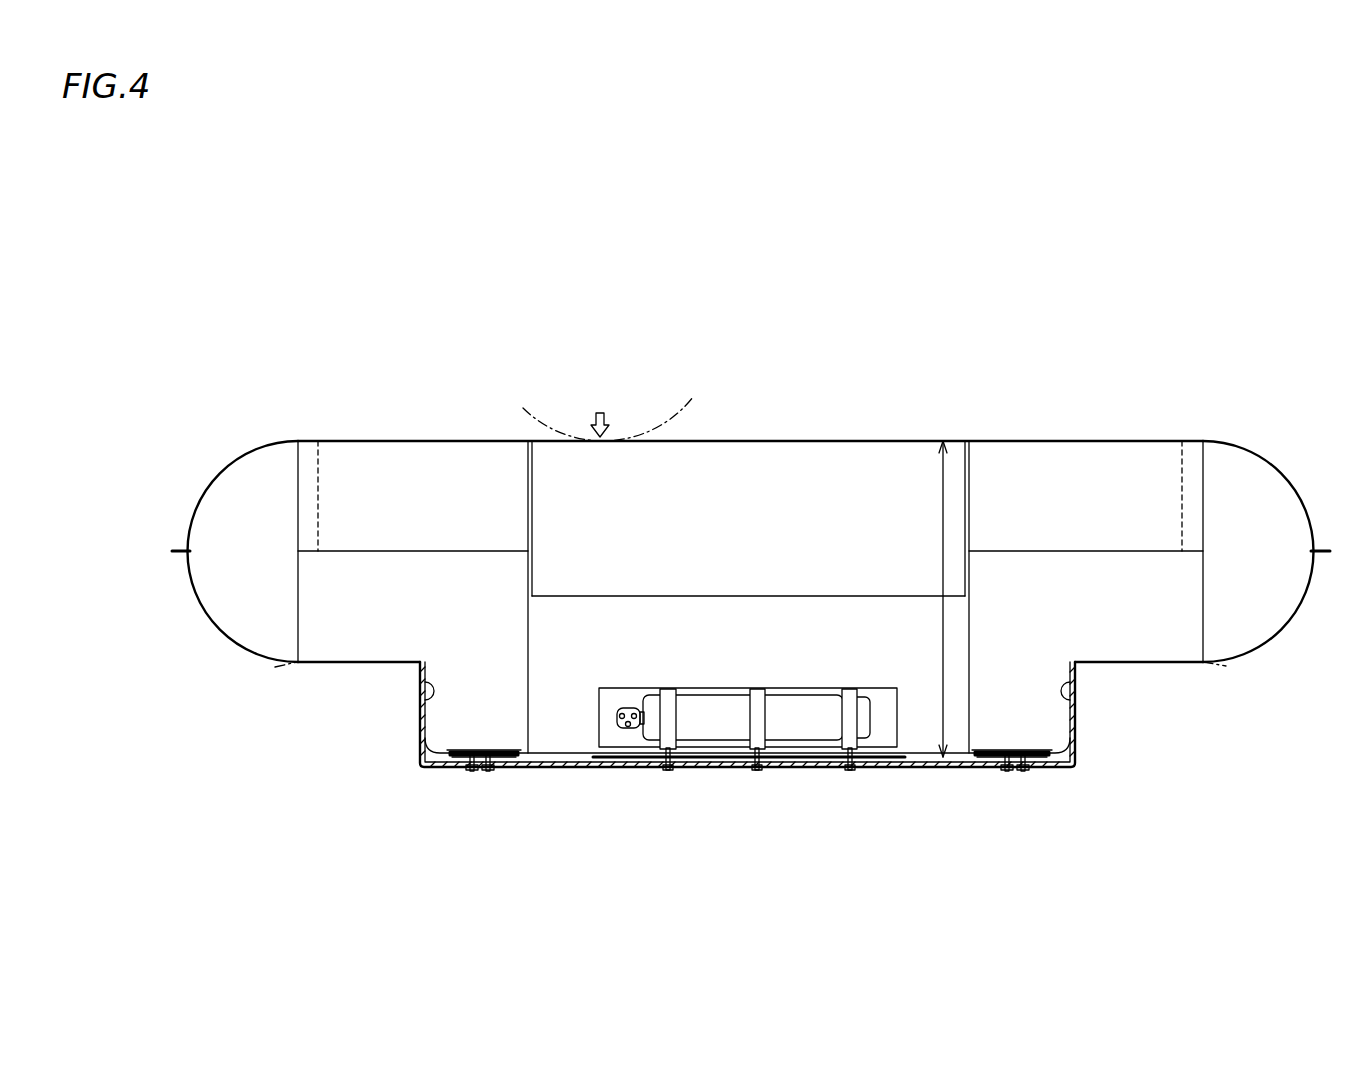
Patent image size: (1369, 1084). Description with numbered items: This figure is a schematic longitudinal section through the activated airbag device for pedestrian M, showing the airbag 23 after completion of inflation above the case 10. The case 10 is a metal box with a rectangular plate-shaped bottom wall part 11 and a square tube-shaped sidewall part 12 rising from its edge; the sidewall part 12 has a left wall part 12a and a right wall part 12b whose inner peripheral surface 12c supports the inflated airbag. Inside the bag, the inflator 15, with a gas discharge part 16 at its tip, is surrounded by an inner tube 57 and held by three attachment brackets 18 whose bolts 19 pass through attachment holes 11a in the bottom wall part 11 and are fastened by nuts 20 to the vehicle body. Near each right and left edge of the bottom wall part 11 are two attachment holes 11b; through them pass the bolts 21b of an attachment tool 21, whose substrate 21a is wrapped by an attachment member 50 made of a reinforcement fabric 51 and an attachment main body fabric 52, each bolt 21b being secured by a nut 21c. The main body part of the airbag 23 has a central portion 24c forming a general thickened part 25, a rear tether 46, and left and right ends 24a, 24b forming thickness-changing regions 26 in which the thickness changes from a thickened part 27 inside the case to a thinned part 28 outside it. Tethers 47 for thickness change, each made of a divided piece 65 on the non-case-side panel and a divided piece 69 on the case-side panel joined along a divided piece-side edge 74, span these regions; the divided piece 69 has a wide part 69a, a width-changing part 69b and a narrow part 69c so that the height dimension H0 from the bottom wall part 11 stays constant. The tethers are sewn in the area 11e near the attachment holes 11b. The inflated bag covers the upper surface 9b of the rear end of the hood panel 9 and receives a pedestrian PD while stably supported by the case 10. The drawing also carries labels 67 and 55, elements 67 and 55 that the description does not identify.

The airbag 23 is at (751, 457).
The left end of main body part 24a is at (1245, 420).
The right end of main body part 24b is at (257, 417).
The central portion of main body part 24c is at (636, 403).
The general thickened part 25 is at (676, 457).
The rear tether 46 is at (765, 452).
The thickness-changing region 26 is at (750, 401).
The thickened part 27 is at (492, 467).
The thinned part 28 is at (350, 467).
The divided piece-side edge 74 is at (753, 466).
The partition plate 67 is at (318, 441).
The panel-side divided piece 69 is at (310, 597).
The panel-side divided piece 65 is at (300, 521).
The tether for thickness change 47 is at (751, 597).
The wide part 69a is at (492, 633).
The width-changing part 69b is at (432, 645).
The narrow part 69c is at (352, 600).
The pedestrian PD is at (553, 432).
The height dimension H0 is at (920, 599).
The hood panel 9 is at (735, 730).
The upper surface of rear end of hood panel 9b is at (275, 668).
The case 10 is at (759, 779).
The bottom wall part 11 is at (1060, 770).
The attachment hole 11a is at (748, 769).
The attachment hole 11b is at (465, 770).
The area in vicinity of attachment holes 11e is at (427, 774).
The sidewall part 12 is at (680, 748).
The left wall part 12a is at (1078, 720).
The right wall part 12b is at (418, 713).
The inner peripheral surface 12c is at (425, 683).
The attachment tool 21 is at (742, 701).
The substrate 21a is at (479, 752).
The bolt 21b is at (490, 768).
The nut 21c is at (492, 772).
The attachment member 50 is at (705, 789).
The reinforcement fabric 51 is at (447, 757).
The attachment main body fabric 52 is at (728, 838).
The inner tube 57 is at (880, 705).
The inflator 15 is at (808, 727).
The gas discharge part 16 is at (628, 708).
The attachment bracket 18 is at (672, 722).
The bolt 19 is at (668, 773).
The nut 20 is at (663, 771).
The mounting bar 55 is at (885, 758).
The airbag device for pedestrian M is at (573, 755).